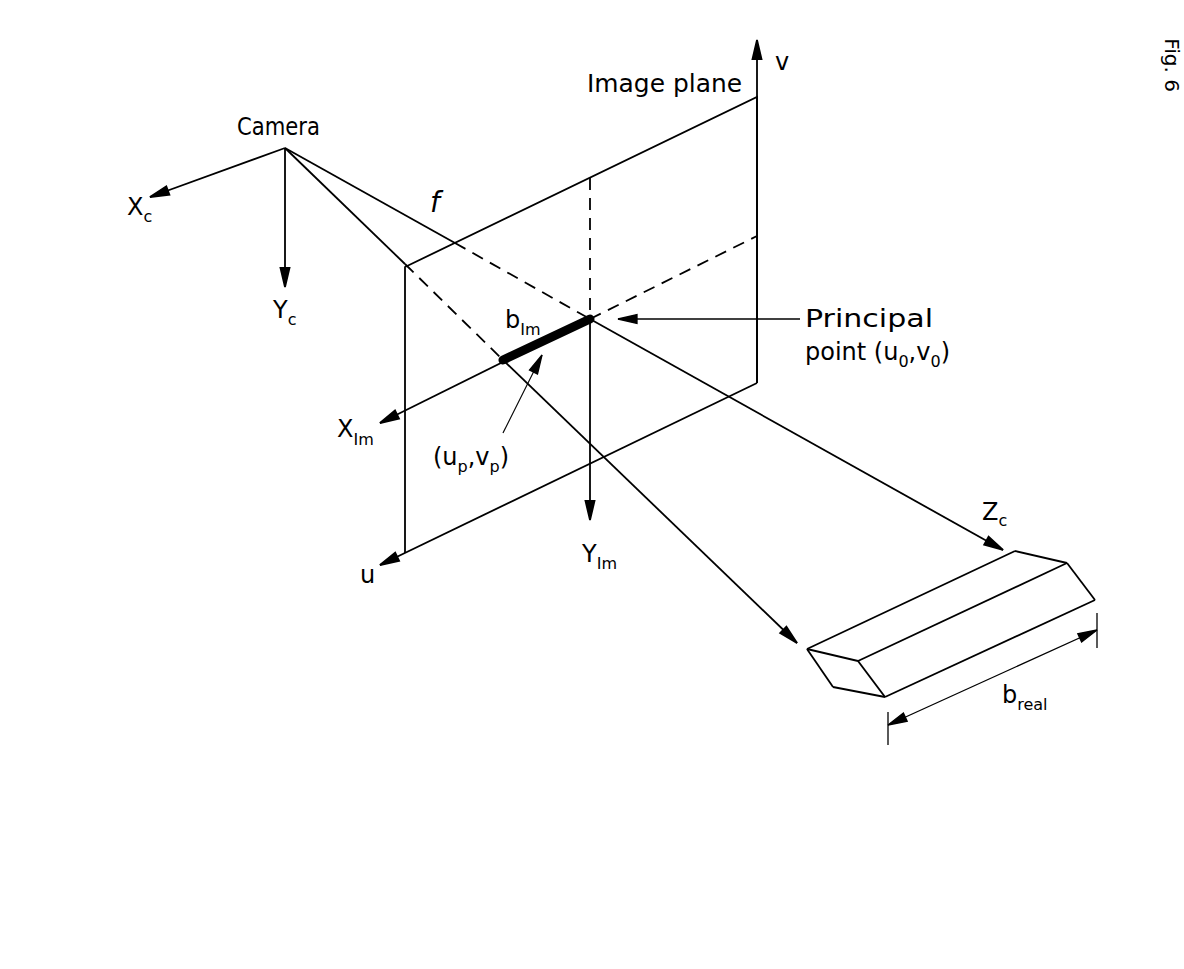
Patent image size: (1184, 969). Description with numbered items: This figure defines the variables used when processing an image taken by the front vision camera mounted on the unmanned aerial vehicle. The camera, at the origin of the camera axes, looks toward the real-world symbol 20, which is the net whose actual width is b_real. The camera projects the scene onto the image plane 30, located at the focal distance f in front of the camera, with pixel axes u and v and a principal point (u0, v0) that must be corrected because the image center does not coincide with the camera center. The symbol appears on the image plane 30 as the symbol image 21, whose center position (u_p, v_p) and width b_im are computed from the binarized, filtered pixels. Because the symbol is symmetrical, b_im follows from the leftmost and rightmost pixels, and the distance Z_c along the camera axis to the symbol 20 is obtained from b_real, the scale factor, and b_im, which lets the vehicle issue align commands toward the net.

The object (real-world target) 20 is at (1023, 563).
The image of object on image plane 21 is at (560, 333).
The image plane 30 is at (641, 153).